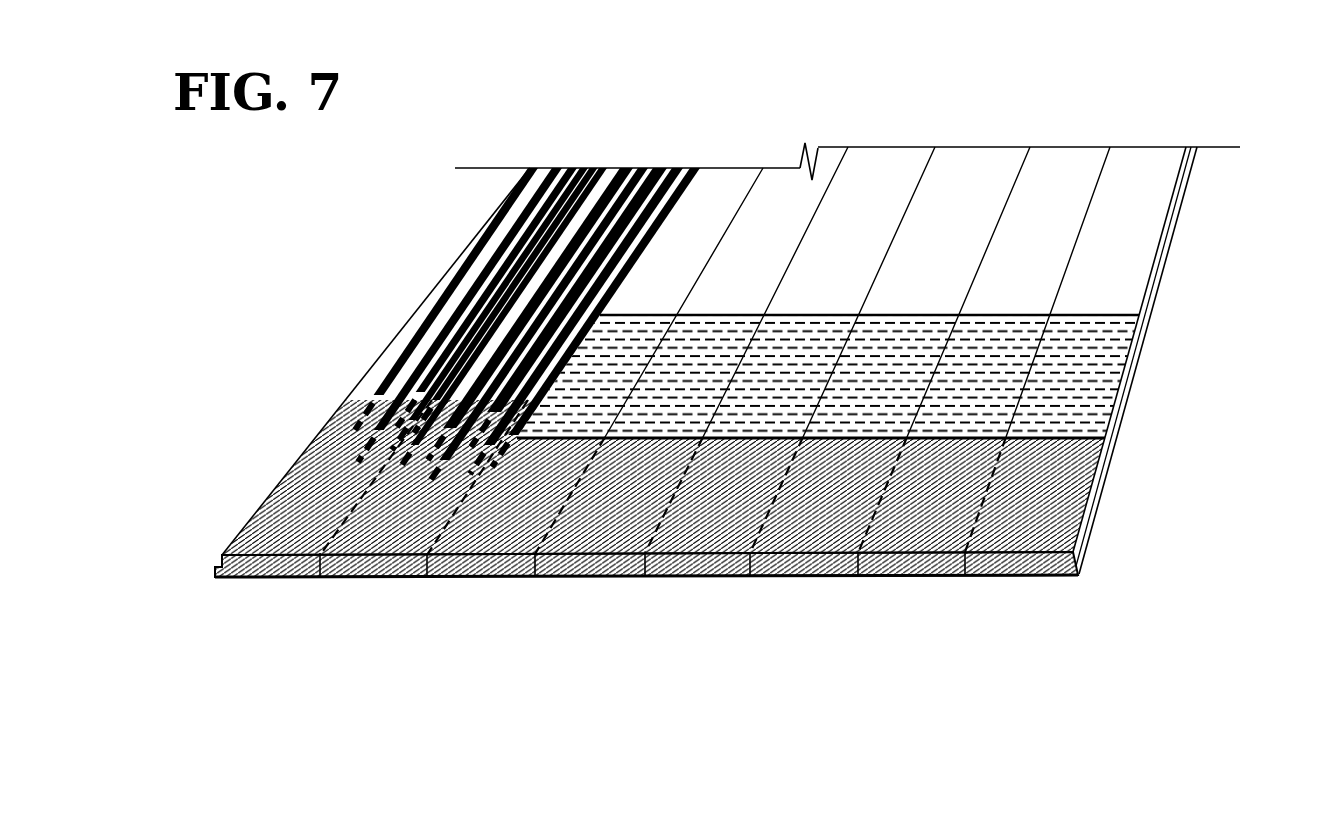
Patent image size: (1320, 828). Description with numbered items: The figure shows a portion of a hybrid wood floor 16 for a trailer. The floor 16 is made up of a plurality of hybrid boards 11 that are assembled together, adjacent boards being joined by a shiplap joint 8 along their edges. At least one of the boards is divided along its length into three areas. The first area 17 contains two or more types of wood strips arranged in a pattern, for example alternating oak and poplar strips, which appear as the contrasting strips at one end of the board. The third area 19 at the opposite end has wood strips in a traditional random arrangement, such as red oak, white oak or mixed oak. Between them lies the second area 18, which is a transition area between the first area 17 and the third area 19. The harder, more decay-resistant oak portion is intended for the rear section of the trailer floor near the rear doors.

The shiplap joint 8 is at (948, 565).
The panel units 11 is at (648, 157).
The hybrid wood floor 16 is at (633, 633).
The first area 17 is at (460, 242).
The second area 18 is at (357, 362).
The third area 19 is at (250, 475).